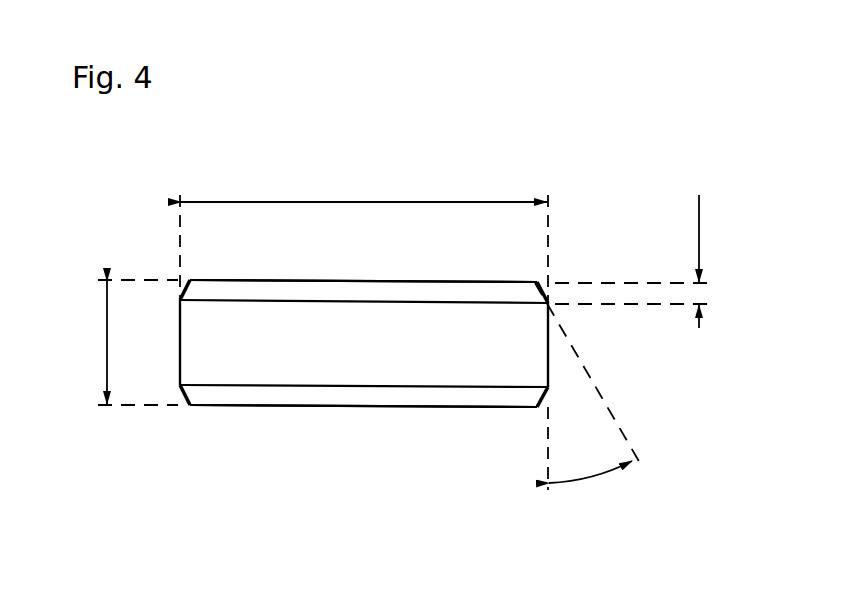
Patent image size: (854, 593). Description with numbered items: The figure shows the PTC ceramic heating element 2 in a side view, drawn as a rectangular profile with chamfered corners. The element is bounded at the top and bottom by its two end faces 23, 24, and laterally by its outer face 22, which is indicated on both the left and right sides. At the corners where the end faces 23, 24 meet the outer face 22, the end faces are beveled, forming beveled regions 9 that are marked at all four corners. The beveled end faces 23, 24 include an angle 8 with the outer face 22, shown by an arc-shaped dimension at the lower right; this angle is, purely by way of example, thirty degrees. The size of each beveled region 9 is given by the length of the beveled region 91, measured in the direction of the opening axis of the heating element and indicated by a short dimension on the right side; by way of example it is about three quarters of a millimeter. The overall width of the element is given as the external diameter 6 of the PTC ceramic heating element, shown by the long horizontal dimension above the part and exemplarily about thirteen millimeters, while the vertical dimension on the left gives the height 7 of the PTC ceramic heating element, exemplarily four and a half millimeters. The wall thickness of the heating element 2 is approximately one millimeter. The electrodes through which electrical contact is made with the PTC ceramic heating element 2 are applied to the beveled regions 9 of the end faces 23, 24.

The PTC ceramic heating element 2 is at (232, 407).
The external diameter of the PTC ceramic heating element 6 is at (343, 202).
The height of the PTC ceramic heating element 7 is at (105, 334).
The angle 8 is at (590, 480).
The beveled region 9 is at (179, 292).
The outer face 22 is at (179, 349).
The end face 23 is at (420, 281).
The end face 24 is at (362, 407).
The length of the beveled region 91 is at (700, 293).